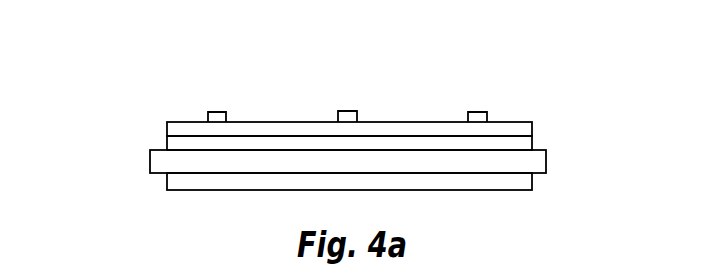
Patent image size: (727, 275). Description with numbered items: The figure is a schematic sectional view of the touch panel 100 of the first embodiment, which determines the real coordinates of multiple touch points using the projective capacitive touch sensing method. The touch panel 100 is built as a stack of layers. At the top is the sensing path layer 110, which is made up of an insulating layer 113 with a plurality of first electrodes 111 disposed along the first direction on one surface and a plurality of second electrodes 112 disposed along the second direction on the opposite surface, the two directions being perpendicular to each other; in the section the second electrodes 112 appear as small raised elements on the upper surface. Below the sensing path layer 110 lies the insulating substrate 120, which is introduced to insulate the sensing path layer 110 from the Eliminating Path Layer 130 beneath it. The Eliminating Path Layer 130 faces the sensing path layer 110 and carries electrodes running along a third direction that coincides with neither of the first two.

The touch panel 100 is at (125, 99).
The sensing path layer 110 is at (150, 122).
The first electrodes 111 is at (527, 140).
The second electrodes 112 is at (475, 112).
The insulating layer 113 is at (517, 123).
The insulating substrate 120 is at (150, 165).
The Eliminating Path Layer 130 is at (167, 187).